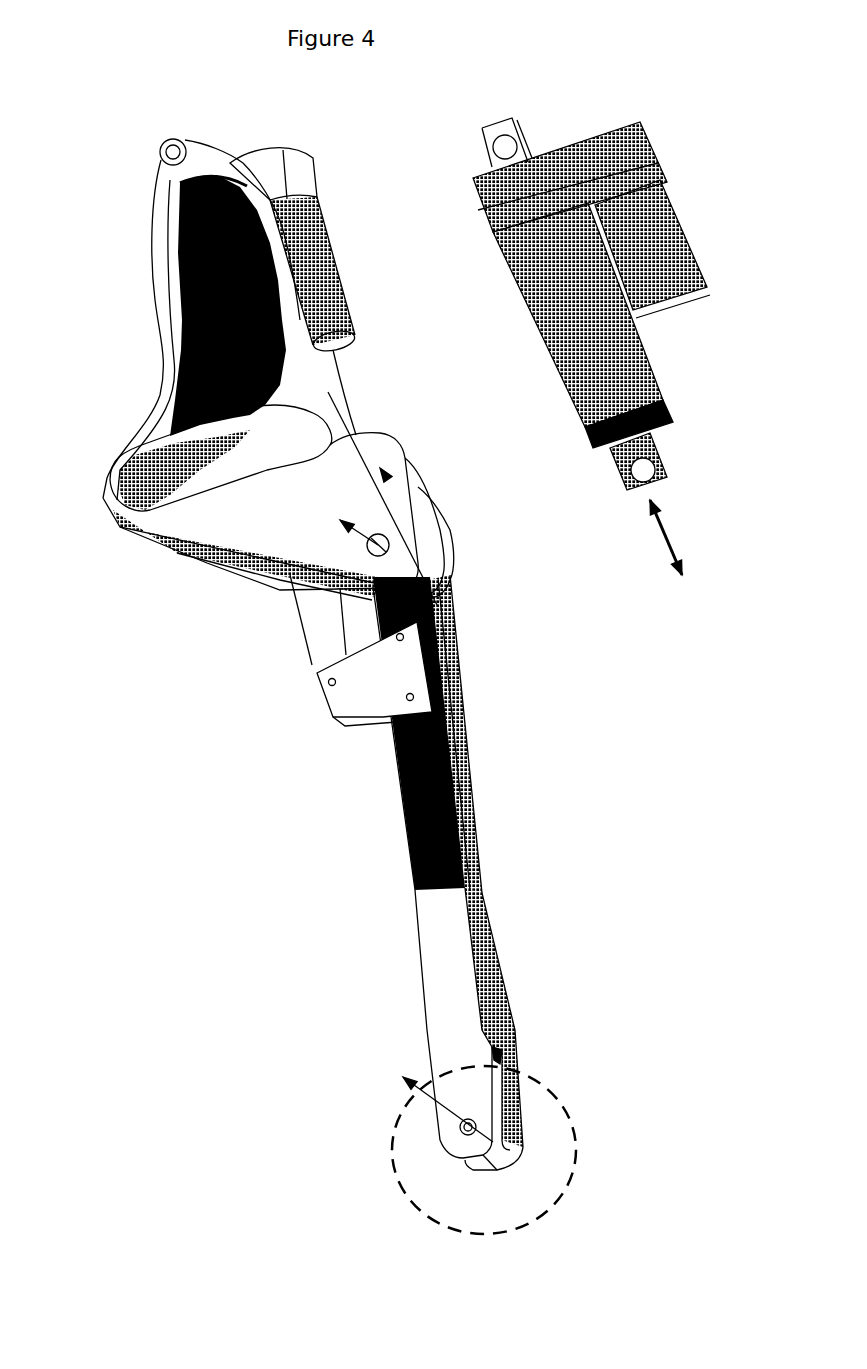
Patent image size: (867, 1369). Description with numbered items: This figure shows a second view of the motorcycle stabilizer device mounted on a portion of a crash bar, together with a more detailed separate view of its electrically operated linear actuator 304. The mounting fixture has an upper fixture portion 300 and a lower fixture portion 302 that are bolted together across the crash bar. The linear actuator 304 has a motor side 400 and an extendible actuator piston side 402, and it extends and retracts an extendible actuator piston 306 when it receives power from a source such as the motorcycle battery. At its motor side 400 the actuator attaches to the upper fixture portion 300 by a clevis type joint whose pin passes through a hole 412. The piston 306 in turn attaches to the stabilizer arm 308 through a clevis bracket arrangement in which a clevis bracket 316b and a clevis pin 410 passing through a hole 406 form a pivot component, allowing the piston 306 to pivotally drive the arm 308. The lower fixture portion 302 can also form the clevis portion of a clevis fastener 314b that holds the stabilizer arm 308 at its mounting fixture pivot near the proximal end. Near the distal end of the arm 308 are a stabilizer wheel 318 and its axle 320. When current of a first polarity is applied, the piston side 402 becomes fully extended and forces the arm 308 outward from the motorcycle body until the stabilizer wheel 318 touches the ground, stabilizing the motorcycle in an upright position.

The upper fixture portion 300 is at (150, 268).
The lower fixture portion 302 is at (195, 571).
The electrically operated linear actuator 304 is at (333, 212).
The extendible actuator piston 306 is at (295, 639).
The stabilizer arm 308 is at (478, 812).
The clevis fastener 314b is at (373, 530).
The clevis bracket 316b is at (352, 733).
The stabilizer wheel 318 is at (435, 1238).
The axle 320 is at (397, 1100).
The motor side 400 is at (505, 112).
The extendible actuator piston side 402 is at (598, 455).
The hole 406 is at (640, 476).
The clevis pin 410 is at (250, 706).
The hole 412 is at (502, 148).